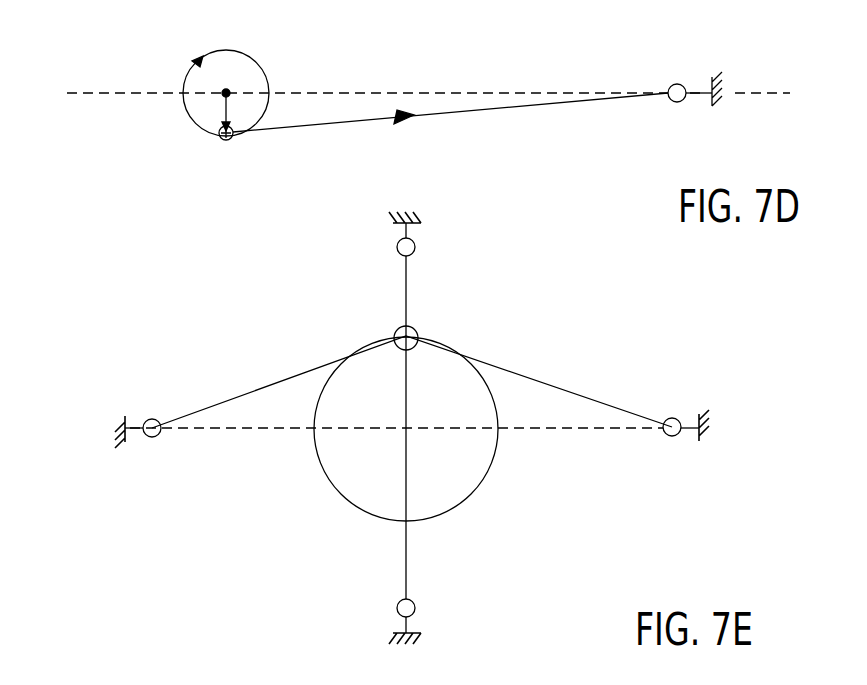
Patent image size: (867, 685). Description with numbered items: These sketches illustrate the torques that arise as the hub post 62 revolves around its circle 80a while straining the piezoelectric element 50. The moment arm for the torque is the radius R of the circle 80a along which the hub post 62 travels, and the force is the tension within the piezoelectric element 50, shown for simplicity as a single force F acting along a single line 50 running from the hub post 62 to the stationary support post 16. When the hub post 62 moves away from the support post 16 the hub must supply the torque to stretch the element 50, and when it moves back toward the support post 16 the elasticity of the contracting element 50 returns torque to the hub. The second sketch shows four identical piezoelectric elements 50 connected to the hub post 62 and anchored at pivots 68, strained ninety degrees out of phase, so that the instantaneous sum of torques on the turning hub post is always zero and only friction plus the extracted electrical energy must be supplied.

In FIG. 7D, the circle 80a is at (185, 80).
In FIG. 7E, the circle 80a is at (480, 490).
In FIG. 7D, the radius R is at (249, 57).
In FIG. 7D, the hub post 62 is at (233, 140).
In FIG. 7D, the piezoelectric element 50 is at (583, 106).
In FIG. 7E, the piezoelectric element 50 is at (404, 303).
In FIG. 7D, the support post 16 is at (677, 102).
In FIG. 7E, the pivot pin 68 is at (413, 253).